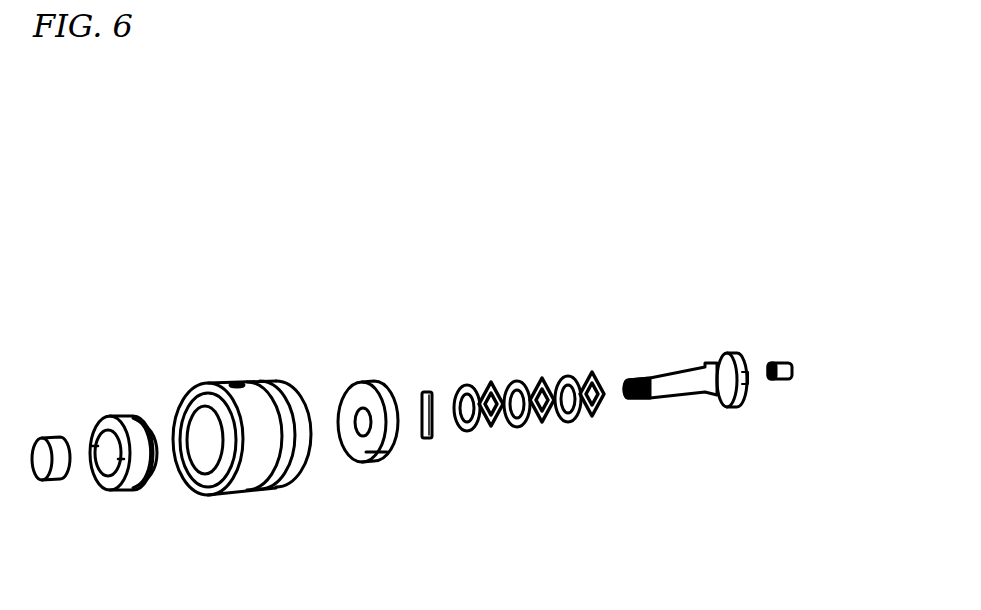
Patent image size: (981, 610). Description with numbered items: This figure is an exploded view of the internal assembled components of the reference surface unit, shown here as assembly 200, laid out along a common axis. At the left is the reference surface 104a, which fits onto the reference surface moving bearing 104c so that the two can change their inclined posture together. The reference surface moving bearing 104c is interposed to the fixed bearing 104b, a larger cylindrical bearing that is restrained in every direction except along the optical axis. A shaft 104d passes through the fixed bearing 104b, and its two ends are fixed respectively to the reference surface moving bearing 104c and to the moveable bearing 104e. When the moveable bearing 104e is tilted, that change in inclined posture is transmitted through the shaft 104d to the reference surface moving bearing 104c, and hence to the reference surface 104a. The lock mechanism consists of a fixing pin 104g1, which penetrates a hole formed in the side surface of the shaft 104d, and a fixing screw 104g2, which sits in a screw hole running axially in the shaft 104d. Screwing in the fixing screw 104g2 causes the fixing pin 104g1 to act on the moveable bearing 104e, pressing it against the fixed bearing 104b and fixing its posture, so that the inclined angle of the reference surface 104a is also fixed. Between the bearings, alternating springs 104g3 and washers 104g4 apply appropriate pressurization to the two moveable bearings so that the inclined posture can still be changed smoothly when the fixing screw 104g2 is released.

The adjustment mechanism assembly 200 is at (432, 205).
The reference surface 104a is at (43, 473).
The fixed bearing 104b is at (258, 475).
The reference surface moving bearing 104c is at (132, 478).
The shaft 104d is at (685, 385).
The moveable bearing 104e is at (362, 448).
The fixing pin 104g1 is at (427, 428).
The fixing screw 104g2 is at (782, 380).
The springs 104g3 is at (590, 374).
The washers 104g4 is at (570, 421).